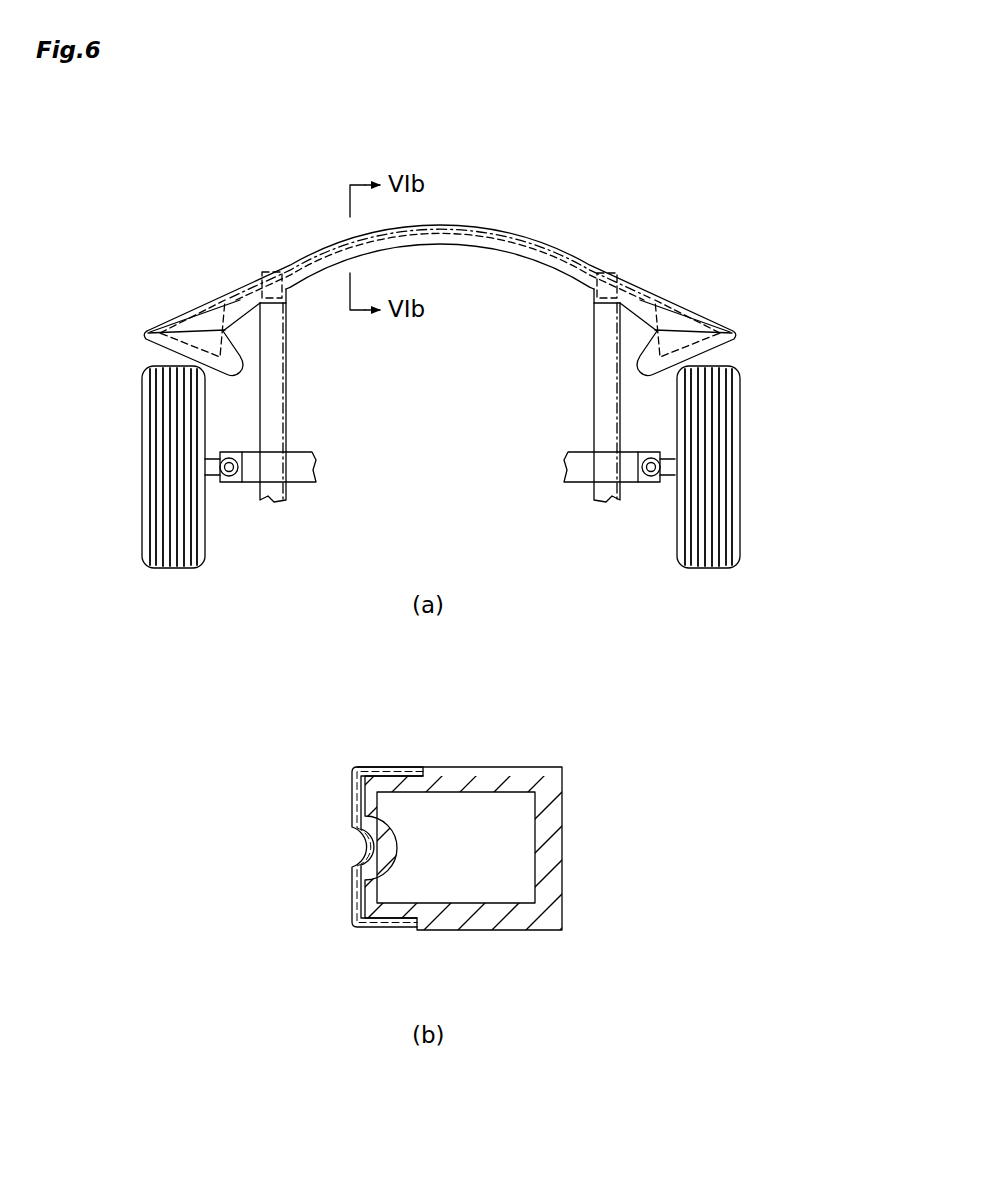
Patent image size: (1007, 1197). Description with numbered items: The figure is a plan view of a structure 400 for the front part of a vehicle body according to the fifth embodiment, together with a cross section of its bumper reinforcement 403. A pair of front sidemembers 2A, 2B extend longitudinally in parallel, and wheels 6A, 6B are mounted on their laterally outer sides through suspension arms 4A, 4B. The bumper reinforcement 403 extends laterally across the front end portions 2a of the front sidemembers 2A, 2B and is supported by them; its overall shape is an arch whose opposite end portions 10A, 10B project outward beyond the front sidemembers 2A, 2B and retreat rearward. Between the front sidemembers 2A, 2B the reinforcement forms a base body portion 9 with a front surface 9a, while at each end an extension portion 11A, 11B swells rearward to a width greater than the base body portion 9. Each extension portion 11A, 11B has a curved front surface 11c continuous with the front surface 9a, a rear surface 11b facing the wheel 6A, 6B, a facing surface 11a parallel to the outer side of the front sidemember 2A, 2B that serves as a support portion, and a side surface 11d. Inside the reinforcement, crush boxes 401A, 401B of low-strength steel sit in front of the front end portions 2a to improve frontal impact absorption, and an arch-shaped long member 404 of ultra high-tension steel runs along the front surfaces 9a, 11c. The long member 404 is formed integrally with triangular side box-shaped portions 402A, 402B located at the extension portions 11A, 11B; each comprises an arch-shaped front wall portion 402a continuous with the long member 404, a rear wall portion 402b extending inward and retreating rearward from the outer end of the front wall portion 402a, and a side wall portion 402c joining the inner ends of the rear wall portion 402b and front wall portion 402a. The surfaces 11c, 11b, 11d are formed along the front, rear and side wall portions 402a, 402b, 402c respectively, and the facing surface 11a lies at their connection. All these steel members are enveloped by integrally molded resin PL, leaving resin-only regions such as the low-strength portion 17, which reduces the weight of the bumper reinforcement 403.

The structure for a front part of a vehicle body 400 is at (217, 202).
The bumper reinforcement 403 is at (620, 215).
The long member 404 is at (445, 225).
The base body portion 9 is at (448, 247).
The front surface 9a is at (473, 227).
The resin PL is at (507, 252).
The low-strength portion 17 is at (327, 253).
The end portion of the bumper reinforcement 10A is at (148, 283).
The end portion of the bumper reinforcement 10B is at (703, 260).
The extension portion 11A is at (150, 298).
The extension portion 11B is at (733, 298).
The facing surface 11a is at (247, 368).
The rear surface 11b is at (170, 347).
The front surface 11c is at (170, 313).
The side surface 11d is at (240, 340).
The crush box 401A is at (287, 300).
The crush box 401B is at (588, 303).
The side box-shaped portion 402A is at (160, 323).
The side box-shaped portion 402B is at (703, 317).
The front wall portion 402a is at (178, 335).
The rear wall portion 402b is at (160, 355).
The side wall portion 402c is at (222, 335).
The front sidemember 2A is at (287, 428).
The front sidemember 2B is at (602, 437).
The front end portion 2a is at (277, 312).
The suspension arm 4A is at (295, 472).
The suspension arm 4B is at (580, 473).
The wheel 6A is at (157, 474).
The wheel 6B is at (717, 477).